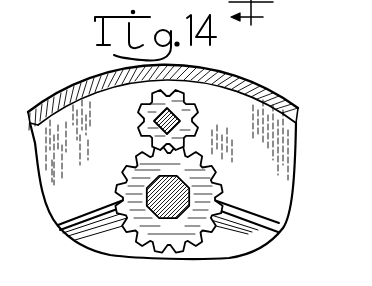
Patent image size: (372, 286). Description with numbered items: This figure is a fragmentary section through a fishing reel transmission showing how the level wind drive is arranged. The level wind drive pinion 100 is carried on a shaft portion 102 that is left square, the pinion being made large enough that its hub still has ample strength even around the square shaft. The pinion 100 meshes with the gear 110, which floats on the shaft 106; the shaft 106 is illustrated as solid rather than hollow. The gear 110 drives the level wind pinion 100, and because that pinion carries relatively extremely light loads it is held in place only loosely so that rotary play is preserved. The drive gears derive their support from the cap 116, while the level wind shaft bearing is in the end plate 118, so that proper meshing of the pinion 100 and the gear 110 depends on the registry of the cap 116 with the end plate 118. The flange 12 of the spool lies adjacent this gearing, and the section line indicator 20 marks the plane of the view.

The flange 12 is at (90, 242).
The section line indicator 20 is at (251, 23).
The level wind drive pinion 100 is at (171, 120).
The shaft portion 102 is at (197, 117).
The shaft 106 is at (168, 198).
The gear 110 is at (117, 181).
The cap 116 is at (292, 102).
The end plate 118 is at (282, 146).